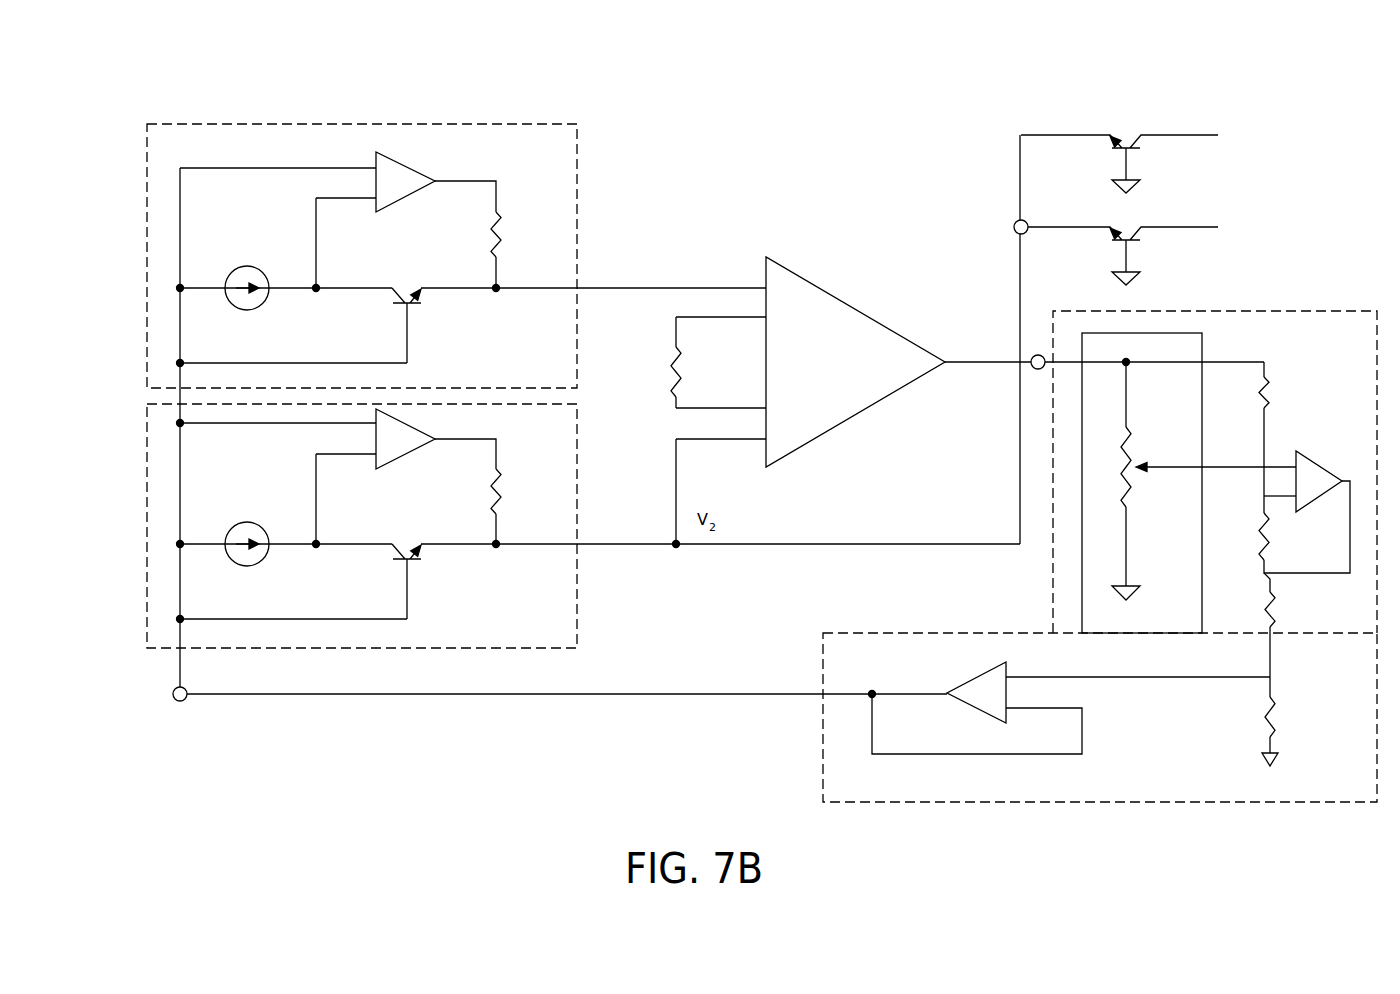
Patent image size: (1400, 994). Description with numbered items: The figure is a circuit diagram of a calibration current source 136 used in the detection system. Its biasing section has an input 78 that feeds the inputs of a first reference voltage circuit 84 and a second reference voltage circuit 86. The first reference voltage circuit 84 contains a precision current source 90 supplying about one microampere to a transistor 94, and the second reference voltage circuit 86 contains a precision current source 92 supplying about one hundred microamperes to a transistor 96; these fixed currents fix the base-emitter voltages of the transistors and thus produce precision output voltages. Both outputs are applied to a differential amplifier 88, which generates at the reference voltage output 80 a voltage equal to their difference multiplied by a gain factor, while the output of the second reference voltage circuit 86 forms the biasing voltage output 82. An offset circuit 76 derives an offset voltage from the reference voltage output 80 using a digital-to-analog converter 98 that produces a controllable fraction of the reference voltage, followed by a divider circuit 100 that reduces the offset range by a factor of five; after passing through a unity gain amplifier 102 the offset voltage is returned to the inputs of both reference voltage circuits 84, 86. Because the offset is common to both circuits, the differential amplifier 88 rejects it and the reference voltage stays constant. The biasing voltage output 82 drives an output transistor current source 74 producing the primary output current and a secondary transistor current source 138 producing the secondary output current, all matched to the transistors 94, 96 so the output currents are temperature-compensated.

The output transistor current source 74 is at (1146, 114).
The offset circuit 76 is at (1211, 454).
The biasing circuit input 78 is at (186, 702).
The reference voltage output 80 is at (1041, 355).
The biasing voltage output 82 is at (1012, 232).
The first reference voltage circuit 84 is at (362, 239).
The second reference voltage circuit 86 is at (388, 528).
The differential amplifier 88 is at (826, 288).
The current source 90 is at (242, 267).
The current source 92 is at (247, 522).
The transistor 94 is at (413, 532).
The transistor 96 is at (413, 274).
The digital-to-analog converter 98 is at (1203, 348).
The divider circuit 100 is at (1100, 714).
The unity gain amplifier 102 is at (970, 677).
The calibration current source 136 is at (883, 60).
The secondary transistor current source 138 is at (1151, 209).